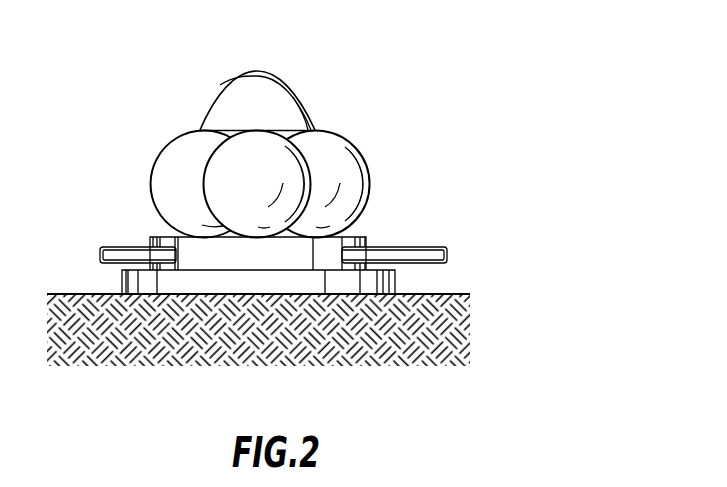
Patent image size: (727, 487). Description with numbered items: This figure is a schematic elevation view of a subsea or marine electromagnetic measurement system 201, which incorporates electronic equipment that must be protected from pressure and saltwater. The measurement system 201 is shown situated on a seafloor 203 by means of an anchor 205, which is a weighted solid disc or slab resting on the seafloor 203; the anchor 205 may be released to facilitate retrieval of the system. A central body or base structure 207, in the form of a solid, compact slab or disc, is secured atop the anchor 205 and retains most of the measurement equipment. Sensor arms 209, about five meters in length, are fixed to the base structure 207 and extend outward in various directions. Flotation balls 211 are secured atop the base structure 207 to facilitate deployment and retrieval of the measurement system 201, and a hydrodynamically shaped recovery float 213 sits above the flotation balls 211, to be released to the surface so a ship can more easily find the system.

The electromagnetic measurement system 201 is at (557, 102).
The seafloor 203 is at (455, 338).
The anchor 205 is at (395, 282).
The base structure 207 is at (365, 237).
The sensor arms 209 is at (442, 247).
The flotation balls 211 is at (287, 176).
The recovery float 213 is at (293, 82).